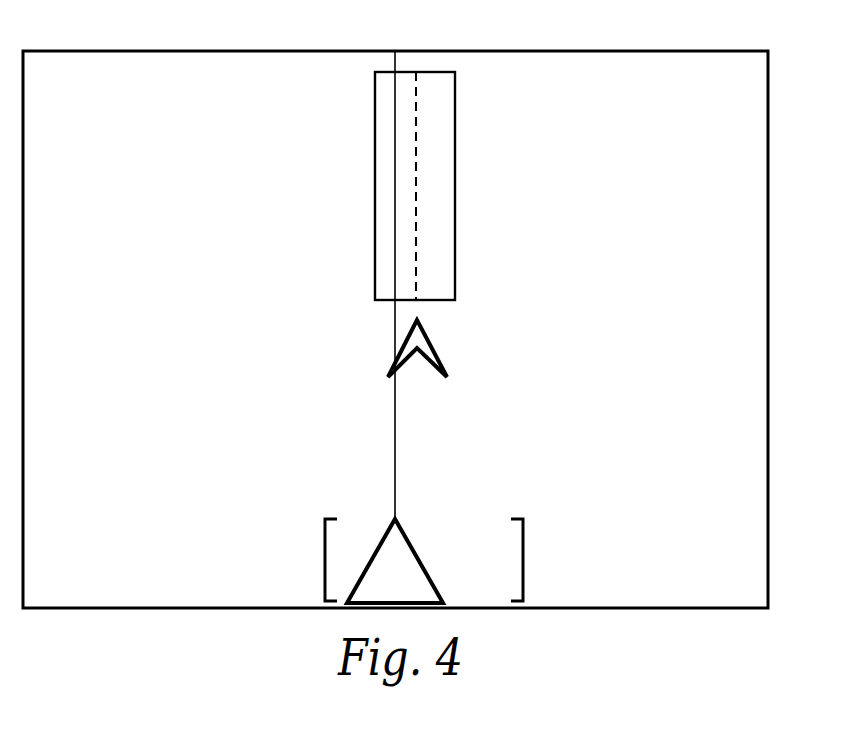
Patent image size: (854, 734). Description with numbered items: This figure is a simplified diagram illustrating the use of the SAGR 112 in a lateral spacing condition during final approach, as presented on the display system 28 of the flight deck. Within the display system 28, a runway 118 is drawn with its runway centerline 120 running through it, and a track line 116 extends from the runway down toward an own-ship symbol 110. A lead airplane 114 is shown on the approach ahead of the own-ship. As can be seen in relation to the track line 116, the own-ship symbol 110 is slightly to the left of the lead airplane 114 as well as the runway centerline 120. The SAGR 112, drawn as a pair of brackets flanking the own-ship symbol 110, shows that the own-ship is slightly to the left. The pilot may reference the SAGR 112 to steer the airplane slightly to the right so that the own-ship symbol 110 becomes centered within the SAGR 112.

The display system 28 is at (730, 51).
The own-ship symbol 110 is at (428, 570).
The SAGR 112 is at (322, 545).
The lead airplane 114 is at (432, 355).
The track line 116 is at (396, 428).
The runway 118 is at (455, 229).
The runway centerline 120 is at (416, 143).